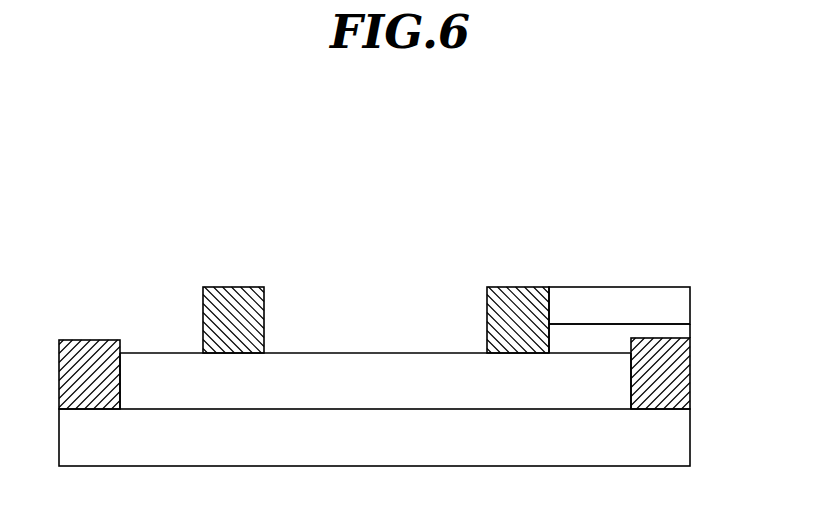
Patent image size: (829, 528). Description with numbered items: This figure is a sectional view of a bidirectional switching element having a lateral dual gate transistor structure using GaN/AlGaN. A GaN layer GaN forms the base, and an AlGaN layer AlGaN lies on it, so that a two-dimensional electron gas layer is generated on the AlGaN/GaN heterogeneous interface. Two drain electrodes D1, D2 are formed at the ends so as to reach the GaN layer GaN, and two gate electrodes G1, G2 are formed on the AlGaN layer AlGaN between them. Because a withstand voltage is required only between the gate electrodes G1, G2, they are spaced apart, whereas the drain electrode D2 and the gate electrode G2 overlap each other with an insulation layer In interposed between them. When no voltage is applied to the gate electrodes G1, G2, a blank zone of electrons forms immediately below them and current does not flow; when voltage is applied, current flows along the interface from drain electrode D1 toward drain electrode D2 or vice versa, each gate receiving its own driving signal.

The drain electrode D1 is at (93, 350).
The drain electrode D2 is at (683, 362).
The gate electrode G1 is at (233, 291).
The gate electrode G2 is at (576, 300).
The insulation layer In is at (618, 335).
The AlGaN layer AlGaN is at (375, 381).
The GaN layer GaN is at (374, 437).